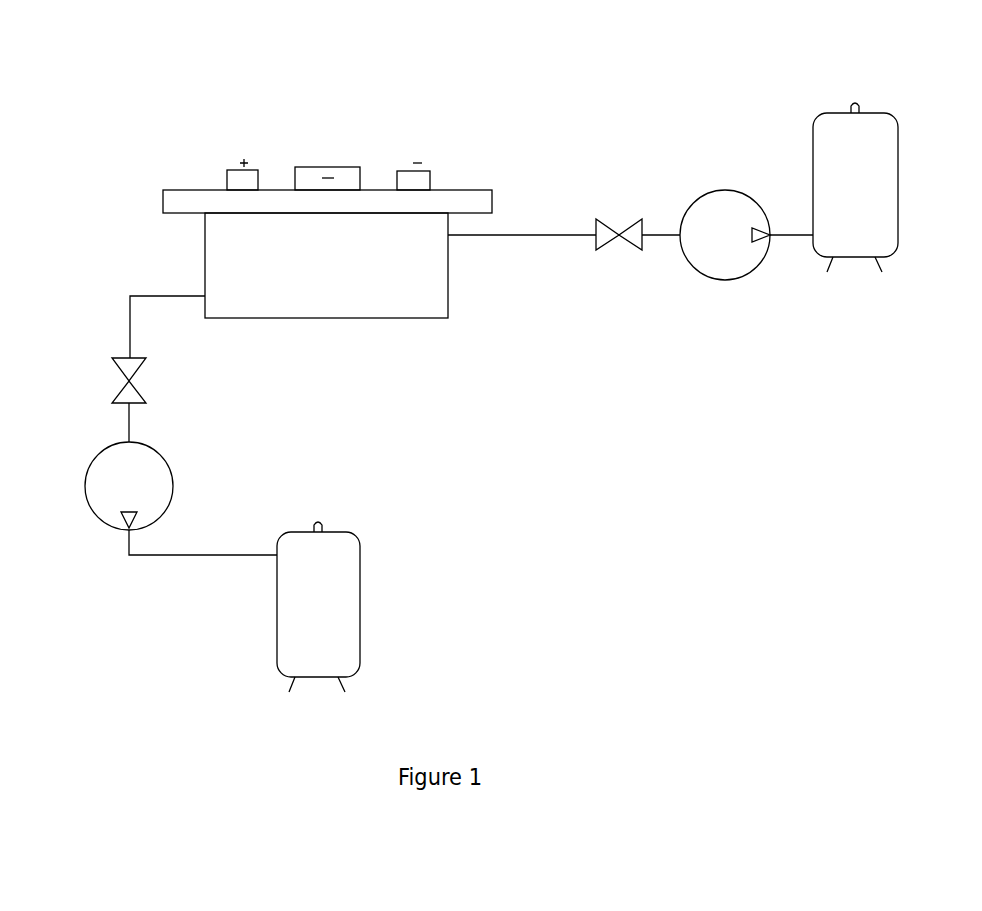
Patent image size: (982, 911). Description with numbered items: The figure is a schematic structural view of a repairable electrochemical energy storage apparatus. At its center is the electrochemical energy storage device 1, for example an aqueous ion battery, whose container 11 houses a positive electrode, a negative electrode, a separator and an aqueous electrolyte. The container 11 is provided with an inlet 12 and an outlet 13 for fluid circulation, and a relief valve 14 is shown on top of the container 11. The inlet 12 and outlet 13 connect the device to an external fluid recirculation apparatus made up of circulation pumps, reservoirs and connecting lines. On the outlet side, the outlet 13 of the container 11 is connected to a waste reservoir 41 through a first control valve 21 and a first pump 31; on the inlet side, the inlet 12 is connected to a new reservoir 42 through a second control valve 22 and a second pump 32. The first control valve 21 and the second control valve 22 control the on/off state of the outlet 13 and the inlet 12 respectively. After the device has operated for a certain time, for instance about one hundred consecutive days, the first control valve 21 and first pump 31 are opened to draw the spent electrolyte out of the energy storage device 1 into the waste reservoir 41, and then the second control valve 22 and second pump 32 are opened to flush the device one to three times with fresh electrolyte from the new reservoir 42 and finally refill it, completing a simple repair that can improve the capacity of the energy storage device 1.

The electrochemical energy storage device 1 is at (178, 146).
The container 11 is at (448, 297).
The inlet 12 is at (458, 235).
The outlet 13 is at (200, 296).
The relief valve 14 is at (325, 165).
The first control valve 21 is at (137, 383).
The second control valve 22 is at (615, 240).
The first pump 31 is at (172, 477).
The second pump 32 is at (725, 280).
The waste reservoir 41 is at (318, 607).
The new reservoir 42 is at (855, 187).